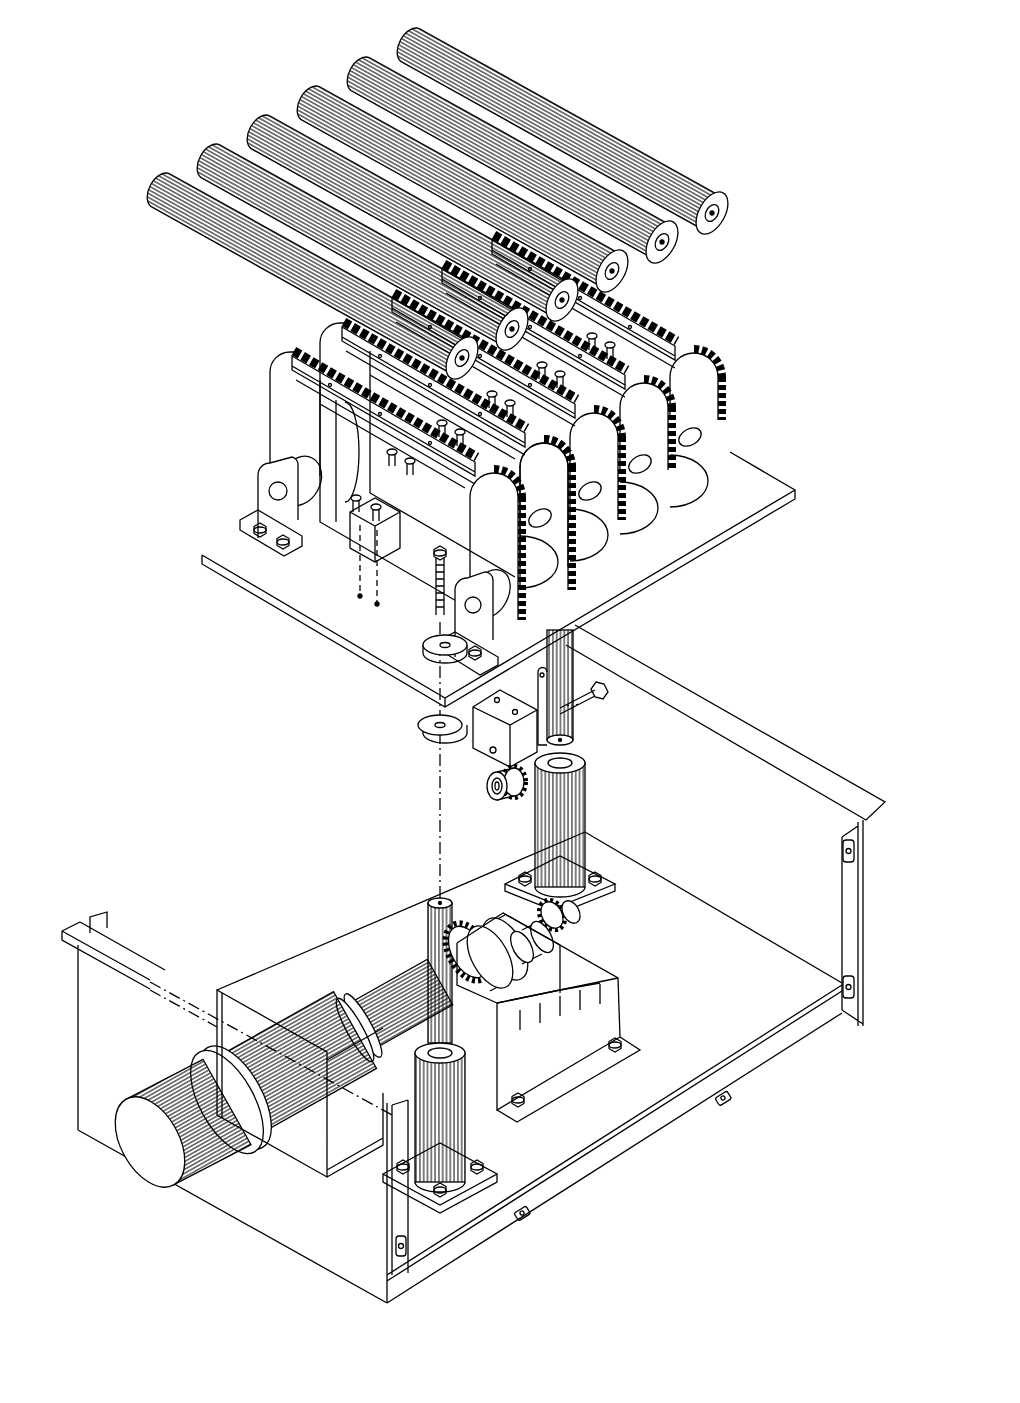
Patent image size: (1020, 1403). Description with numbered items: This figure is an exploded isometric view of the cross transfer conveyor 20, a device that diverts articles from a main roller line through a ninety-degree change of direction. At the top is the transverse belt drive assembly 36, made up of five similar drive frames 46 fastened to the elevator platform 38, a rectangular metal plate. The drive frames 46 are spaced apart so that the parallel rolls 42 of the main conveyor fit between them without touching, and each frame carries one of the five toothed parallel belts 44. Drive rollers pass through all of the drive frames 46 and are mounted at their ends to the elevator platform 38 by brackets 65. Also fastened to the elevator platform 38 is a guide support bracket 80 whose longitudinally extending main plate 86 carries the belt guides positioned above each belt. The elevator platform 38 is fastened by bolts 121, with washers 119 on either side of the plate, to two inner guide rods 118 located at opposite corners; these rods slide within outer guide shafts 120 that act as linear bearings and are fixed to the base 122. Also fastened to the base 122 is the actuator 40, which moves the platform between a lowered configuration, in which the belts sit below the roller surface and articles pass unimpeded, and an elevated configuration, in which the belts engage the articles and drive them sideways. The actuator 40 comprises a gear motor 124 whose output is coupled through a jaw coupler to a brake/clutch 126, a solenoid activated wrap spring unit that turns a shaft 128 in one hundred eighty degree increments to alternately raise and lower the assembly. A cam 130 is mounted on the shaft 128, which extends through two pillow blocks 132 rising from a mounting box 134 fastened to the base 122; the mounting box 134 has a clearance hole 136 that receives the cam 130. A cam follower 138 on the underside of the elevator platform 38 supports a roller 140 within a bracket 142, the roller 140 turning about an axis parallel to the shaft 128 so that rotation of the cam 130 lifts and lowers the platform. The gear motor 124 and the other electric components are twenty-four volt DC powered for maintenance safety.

The cross transfer conveyor 20 is at (806, 252).
The transverse belt drive assembly 36 is at (525, 455).
The elevator platform 38 is at (780, 470).
The actuator 40 is at (402, 1067).
The parallel rolls 42 is at (325, 88).
The parallel belts 44 is at (683, 330).
The drive frames 46 is at (327, 340).
The brackets 65 is at (265, 503).
The guide support bracket 80 is at (361, 468).
The main plate 86 is at (407, 483).
The inner guide rods 118 is at (567, 677).
The washers 119 is at (417, 645).
The outer guide shafts 120 is at (580, 810).
The bolts 121 is at (432, 598).
The base 122 is at (758, 1083).
The gear motor 124 is at (277, 1083).
The brake/clutch 126 is at (353, 1007).
The shaft 128 is at (548, 942).
The cam 130 is at (517, 980).
The pillow blocks 132 is at (465, 945).
The mounting box 134 is at (612, 1022).
The clearance hole 136 is at (522, 1005).
The cam follower 138 is at (454, 761).
The roller 140 is at (493, 797).
The bracket 142 is at (480, 737).